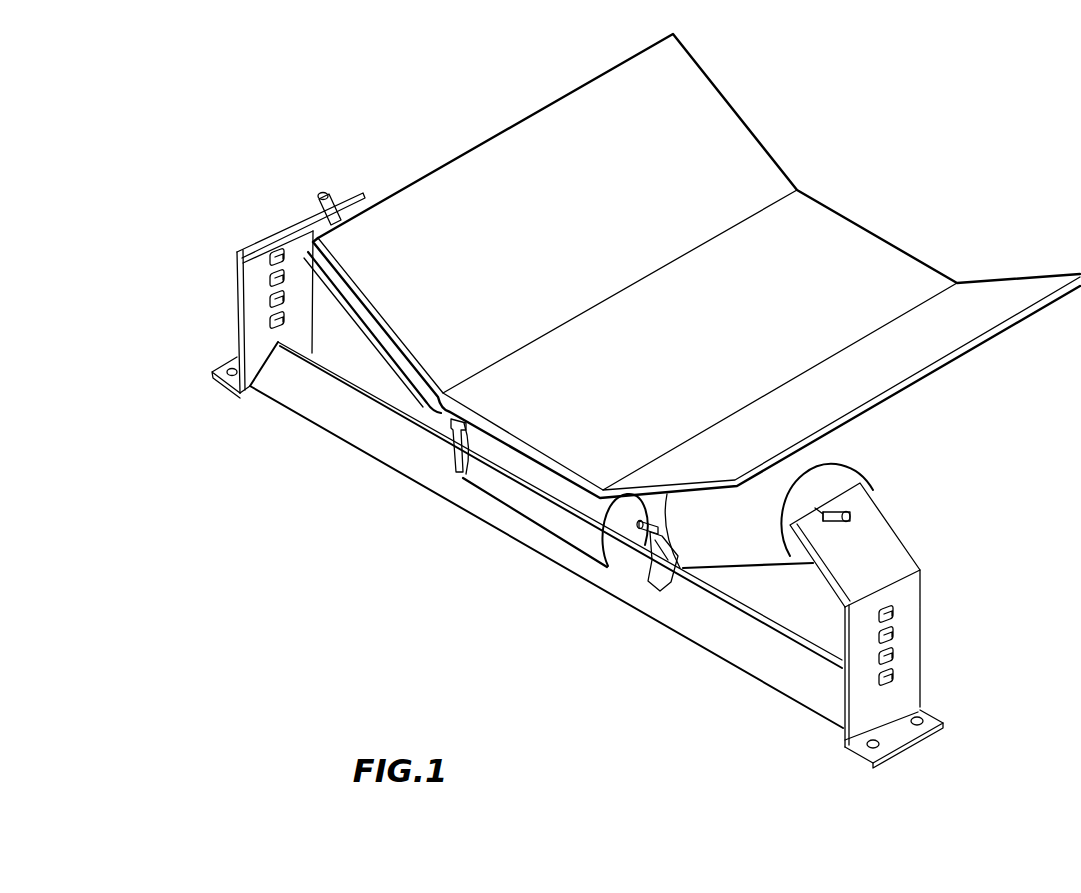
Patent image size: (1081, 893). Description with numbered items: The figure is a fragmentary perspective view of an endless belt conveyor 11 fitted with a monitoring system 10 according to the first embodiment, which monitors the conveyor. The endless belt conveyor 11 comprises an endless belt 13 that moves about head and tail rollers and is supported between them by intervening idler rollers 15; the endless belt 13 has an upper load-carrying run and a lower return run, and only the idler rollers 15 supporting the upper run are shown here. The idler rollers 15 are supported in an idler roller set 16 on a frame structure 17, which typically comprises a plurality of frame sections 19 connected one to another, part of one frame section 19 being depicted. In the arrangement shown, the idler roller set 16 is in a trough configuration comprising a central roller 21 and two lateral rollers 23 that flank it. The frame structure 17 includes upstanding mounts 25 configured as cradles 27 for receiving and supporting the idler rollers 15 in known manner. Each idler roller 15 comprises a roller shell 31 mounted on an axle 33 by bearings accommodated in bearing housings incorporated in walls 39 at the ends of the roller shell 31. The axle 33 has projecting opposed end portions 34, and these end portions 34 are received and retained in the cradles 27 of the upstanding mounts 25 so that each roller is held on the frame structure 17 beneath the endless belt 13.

The monitoring system 10 is at (190, 122).
The endless belt conveyor 11 is at (478, 146).
The endless belt 13 is at (722, 141).
The idler roller 15 is at (517, 497).
The idler roller set 16 is at (533, 495).
The frame structure 17 is at (752, 668).
The frame section 19 is at (905, 737).
The central roller 21 is at (563, 527).
The lateral roller 23 is at (368, 323).
The upstanding mount 25 is at (905, 635).
The cradle 27 is at (350, 193).
The roller shell 31 is at (456, 480).
The axle 33 is at (850, 498).
The end portion 34 is at (321, 194).
The wall 39 is at (853, 483).